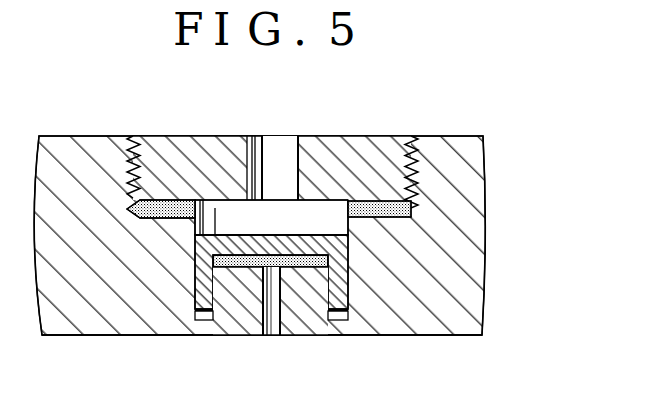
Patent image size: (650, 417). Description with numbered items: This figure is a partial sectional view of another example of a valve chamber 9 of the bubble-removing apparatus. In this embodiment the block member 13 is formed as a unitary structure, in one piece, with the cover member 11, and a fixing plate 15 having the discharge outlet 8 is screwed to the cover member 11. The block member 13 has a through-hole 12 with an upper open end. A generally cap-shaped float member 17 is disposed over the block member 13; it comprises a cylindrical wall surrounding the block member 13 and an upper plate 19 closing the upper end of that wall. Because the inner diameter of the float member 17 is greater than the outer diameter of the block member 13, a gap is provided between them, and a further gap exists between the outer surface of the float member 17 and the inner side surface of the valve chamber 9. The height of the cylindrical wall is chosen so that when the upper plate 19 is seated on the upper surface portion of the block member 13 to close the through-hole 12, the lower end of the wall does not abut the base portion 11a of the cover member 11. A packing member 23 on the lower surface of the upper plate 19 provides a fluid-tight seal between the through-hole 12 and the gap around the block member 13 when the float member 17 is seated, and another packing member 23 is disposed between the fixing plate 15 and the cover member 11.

The discharge outlet 8 is at (298, 178).
The valve chamber 9 is at (227, 225).
The cover member 11 is at (445, 163).
The base portion of the cover member 11a is at (337, 320).
The through-hole 12 is at (275, 336).
The block member 13 is at (317, 285).
The fixing plate 15 is at (202, 150).
The float member 17 is at (333, 255).
The upper plate 19 is at (323, 235).
The packing member 23 is at (158, 207).